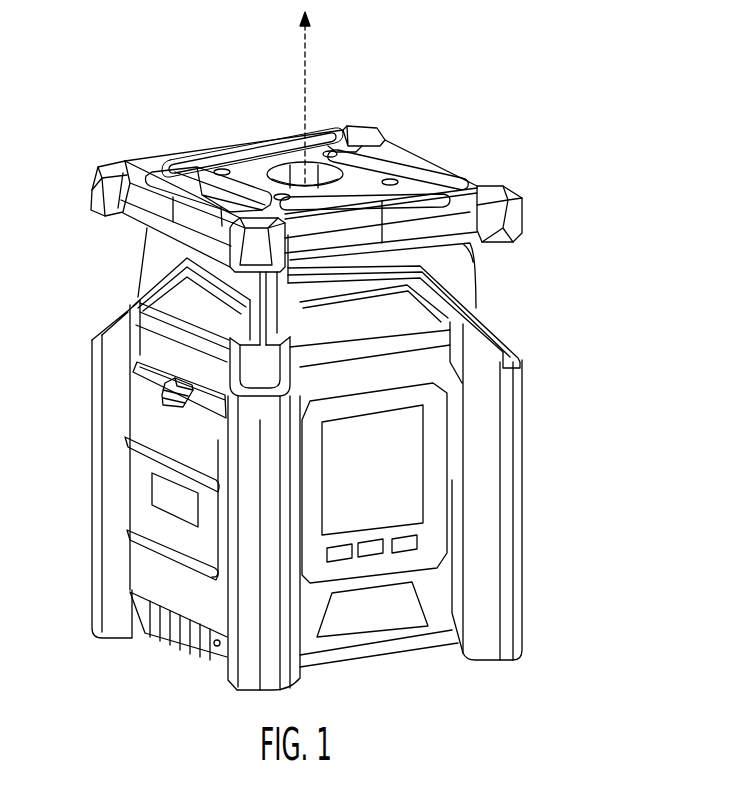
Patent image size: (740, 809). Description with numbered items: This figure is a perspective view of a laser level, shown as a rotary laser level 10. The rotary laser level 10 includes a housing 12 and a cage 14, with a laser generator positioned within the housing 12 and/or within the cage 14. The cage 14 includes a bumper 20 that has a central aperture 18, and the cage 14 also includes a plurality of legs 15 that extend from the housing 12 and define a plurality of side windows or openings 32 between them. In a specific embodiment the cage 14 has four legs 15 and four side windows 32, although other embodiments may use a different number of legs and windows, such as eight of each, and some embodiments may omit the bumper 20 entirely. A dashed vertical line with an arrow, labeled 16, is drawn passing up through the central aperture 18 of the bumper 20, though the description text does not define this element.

The rotary laser level 10 is at (577, 66).
The housing 12 is at (572, 395).
The cage 14 is at (536, 194).
The legs 15 is at (474, 264).
The rotation axis 16 is at (303, 87).
The central aperture 18 is at (293, 157).
The bumper 20 is at (110, 163).
The side windows 32 is at (471, 288).